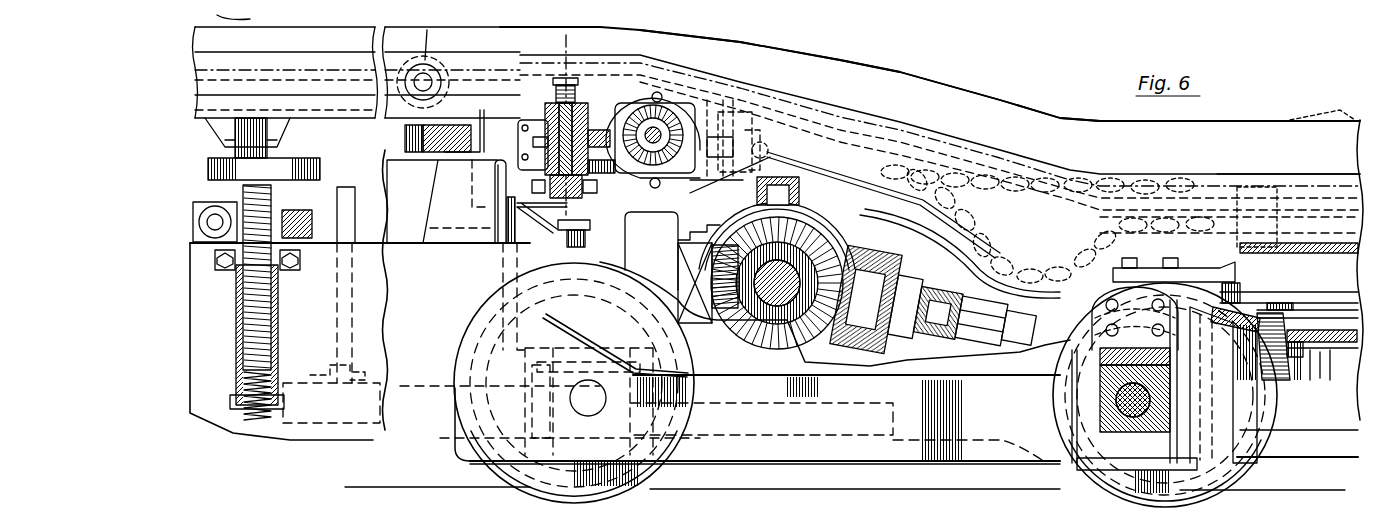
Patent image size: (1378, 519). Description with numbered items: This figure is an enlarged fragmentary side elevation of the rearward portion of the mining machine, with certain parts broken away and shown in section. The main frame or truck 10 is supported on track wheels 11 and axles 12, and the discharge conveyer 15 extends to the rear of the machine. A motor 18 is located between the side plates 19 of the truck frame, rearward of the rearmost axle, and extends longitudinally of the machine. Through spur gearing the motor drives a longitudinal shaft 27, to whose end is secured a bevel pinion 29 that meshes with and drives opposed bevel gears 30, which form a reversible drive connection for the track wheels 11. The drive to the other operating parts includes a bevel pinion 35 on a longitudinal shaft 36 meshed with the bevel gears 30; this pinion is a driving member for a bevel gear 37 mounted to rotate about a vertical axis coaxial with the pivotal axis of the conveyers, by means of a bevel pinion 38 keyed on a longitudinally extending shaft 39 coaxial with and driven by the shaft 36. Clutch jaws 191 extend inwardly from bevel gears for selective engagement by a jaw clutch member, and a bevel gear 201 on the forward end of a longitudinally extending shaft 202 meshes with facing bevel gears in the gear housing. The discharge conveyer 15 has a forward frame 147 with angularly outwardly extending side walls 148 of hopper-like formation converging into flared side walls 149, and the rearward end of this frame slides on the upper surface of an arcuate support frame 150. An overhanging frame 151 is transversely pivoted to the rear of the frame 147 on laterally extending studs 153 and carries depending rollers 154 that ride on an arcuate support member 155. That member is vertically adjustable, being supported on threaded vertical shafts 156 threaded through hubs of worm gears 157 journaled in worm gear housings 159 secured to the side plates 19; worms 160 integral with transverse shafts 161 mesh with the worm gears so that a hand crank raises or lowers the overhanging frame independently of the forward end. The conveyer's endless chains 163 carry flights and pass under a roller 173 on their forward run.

The main frame or truck 10 is at (806, 462).
The track wheels 11 is at (520, 468).
The axles 12 is at (585, 416).
The discharge conveyer 15 is at (886, 76).
The motor 18 is at (363, 162).
The side plates 19 is at (222, 440).
The longitudinal shaft 27 is at (672, 258).
The bevel pinion 29 is at (722, 305).
The bevel gears 30 is at (803, 228).
The bevel pinion 35 is at (868, 335).
The longitudinal shaft 36 is at (906, 330).
The bevel gear 37 is at (1333, 348).
The bevel pinion 38 is at (1262, 382).
The longitudinally extending shaft 39 is at (1022, 340).
The forward frame 147 is at (1180, 244).
The side walls 148 is at (1336, 122).
The flared side walls 149 is at (1050, 118).
The arcuate support frame 150 is at (405, 137).
The overhanging frame 151 is at (357, 120).
The studs 153 is at (430, 80).
The rollers 154 is at (258, 158).
The arcuate support member 155 is at (322, 185).
The threaded vertical shafts 156 is at (238, 198).
The worm gears 157 is at (214, 240).
The worm gear housings 159 is at (300, 262).
The worms 160 is at (210, 240).
The transverse shafts 161 is at (212, 240).
The endless chains 163 is at (1001, 240).
The roller 173 is at (737, 133).
The clutch jaws 191 is at (683, 117).
The bevel gear 201 is at (645, 100).
The longitudinally extending shaft 202 is at (607, 130).